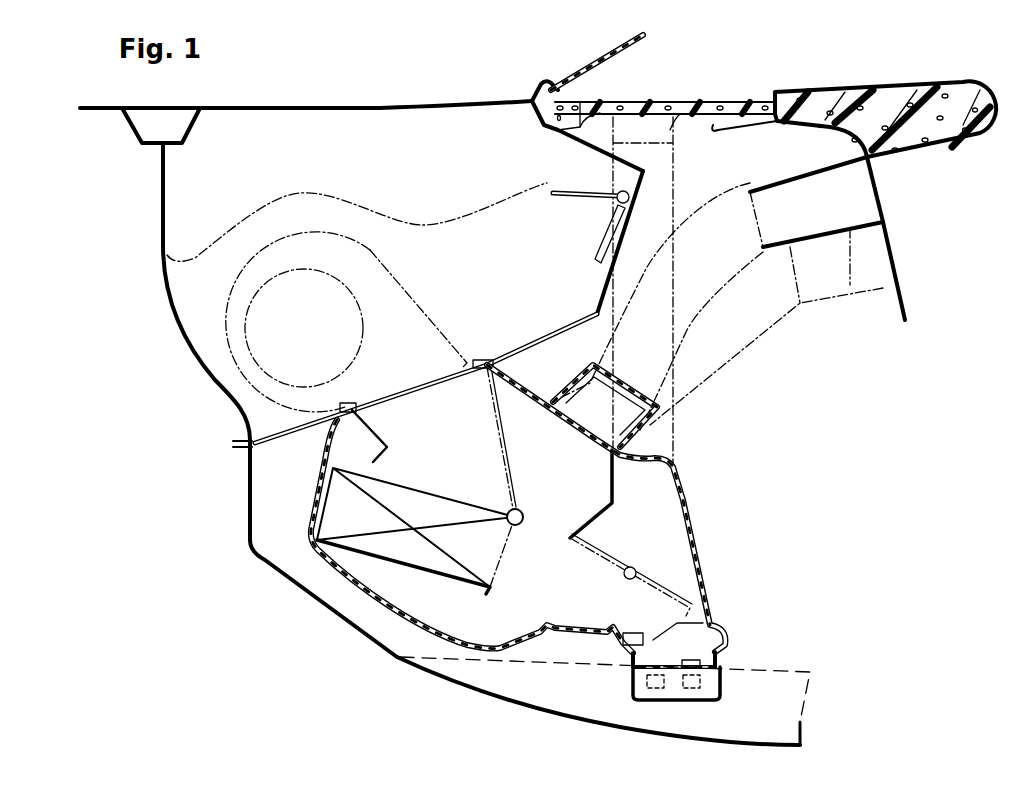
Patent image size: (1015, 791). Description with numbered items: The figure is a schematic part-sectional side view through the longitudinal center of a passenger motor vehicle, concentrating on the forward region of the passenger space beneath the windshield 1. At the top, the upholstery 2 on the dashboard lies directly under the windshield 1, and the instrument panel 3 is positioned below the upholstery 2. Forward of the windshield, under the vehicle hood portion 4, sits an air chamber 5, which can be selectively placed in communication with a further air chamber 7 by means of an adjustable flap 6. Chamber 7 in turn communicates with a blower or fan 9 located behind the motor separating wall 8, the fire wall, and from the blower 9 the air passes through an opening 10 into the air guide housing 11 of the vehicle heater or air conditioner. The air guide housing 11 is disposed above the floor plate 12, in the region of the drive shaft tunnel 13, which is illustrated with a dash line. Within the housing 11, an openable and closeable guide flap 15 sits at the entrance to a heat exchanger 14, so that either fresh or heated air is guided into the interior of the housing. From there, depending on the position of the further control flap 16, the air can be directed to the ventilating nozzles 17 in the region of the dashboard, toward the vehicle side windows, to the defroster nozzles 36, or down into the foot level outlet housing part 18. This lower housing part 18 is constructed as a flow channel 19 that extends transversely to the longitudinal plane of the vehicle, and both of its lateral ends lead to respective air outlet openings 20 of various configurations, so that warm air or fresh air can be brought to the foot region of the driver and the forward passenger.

The windshield 1 is at (578, 78).
The upholstery 2 is at (887, 92).
The instrument panel 3 is at (893, 247).
The vehicle hood portion 4 is at (448, 100).
The air chamber 5 is at (452, 162).
The adjustable flap 6 is at (580, 200).
The further air chamber 7 is at (499, 259).
The motor separating wall 8 is at (180, 322).
The blower or fan 9 is at (345, 300).
The opening 10 is at (407, 382).
The air guide housing 11 is at (705, 484).
The floor plate 12 is at (352, 628).
The drive shaft tunnel 13 is at (795, 703).
The heat exchanger 14 is at (420, 500).
The guide flap 15 is at (493, 418).
The further control flap 16 is at (613, 557).
The ventilating nozzles 17 is at (866, 195).
The lower housing part 18 is at (670, 687).
The flow channel 19 is at (657, 638).
The air outlet openings 20 is at (645, 681).
The defroster nozzles 36 is at (645, 122).